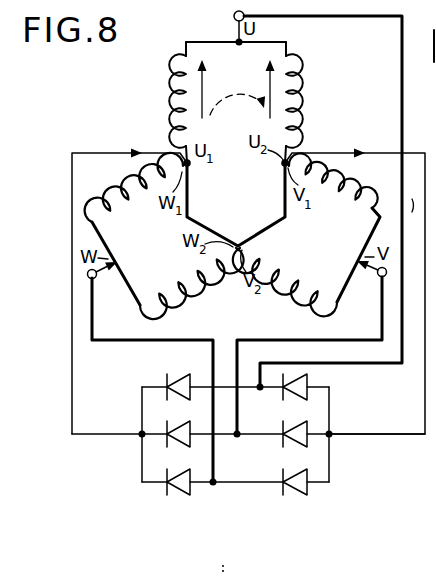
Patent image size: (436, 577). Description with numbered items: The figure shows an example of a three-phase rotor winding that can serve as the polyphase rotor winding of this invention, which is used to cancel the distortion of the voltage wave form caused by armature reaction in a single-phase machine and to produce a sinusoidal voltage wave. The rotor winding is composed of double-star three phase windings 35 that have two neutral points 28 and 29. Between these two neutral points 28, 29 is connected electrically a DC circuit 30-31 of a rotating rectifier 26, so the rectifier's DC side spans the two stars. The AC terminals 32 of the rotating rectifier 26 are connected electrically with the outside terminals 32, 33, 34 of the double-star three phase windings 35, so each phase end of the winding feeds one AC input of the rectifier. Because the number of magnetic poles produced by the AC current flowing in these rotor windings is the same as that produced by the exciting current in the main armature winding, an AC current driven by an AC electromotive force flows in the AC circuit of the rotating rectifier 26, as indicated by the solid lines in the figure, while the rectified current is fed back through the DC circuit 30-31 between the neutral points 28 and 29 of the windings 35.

The rotating rectifier 26 is at (259, 523).
The neutral point 28 is at (184, 158).
The neutral point 29 is at (288, 160).
The DC circuit terminal 30 is at (142, 436).
The DC circuit terminal 31 is at (331, 436).
The AC terminal 32 is at (234, 16).
The outside terminal 33 is at (312, 347).
The outside terminal 34 is at (151, 372).
The double-star three phase windings 35 is at (359, 107).